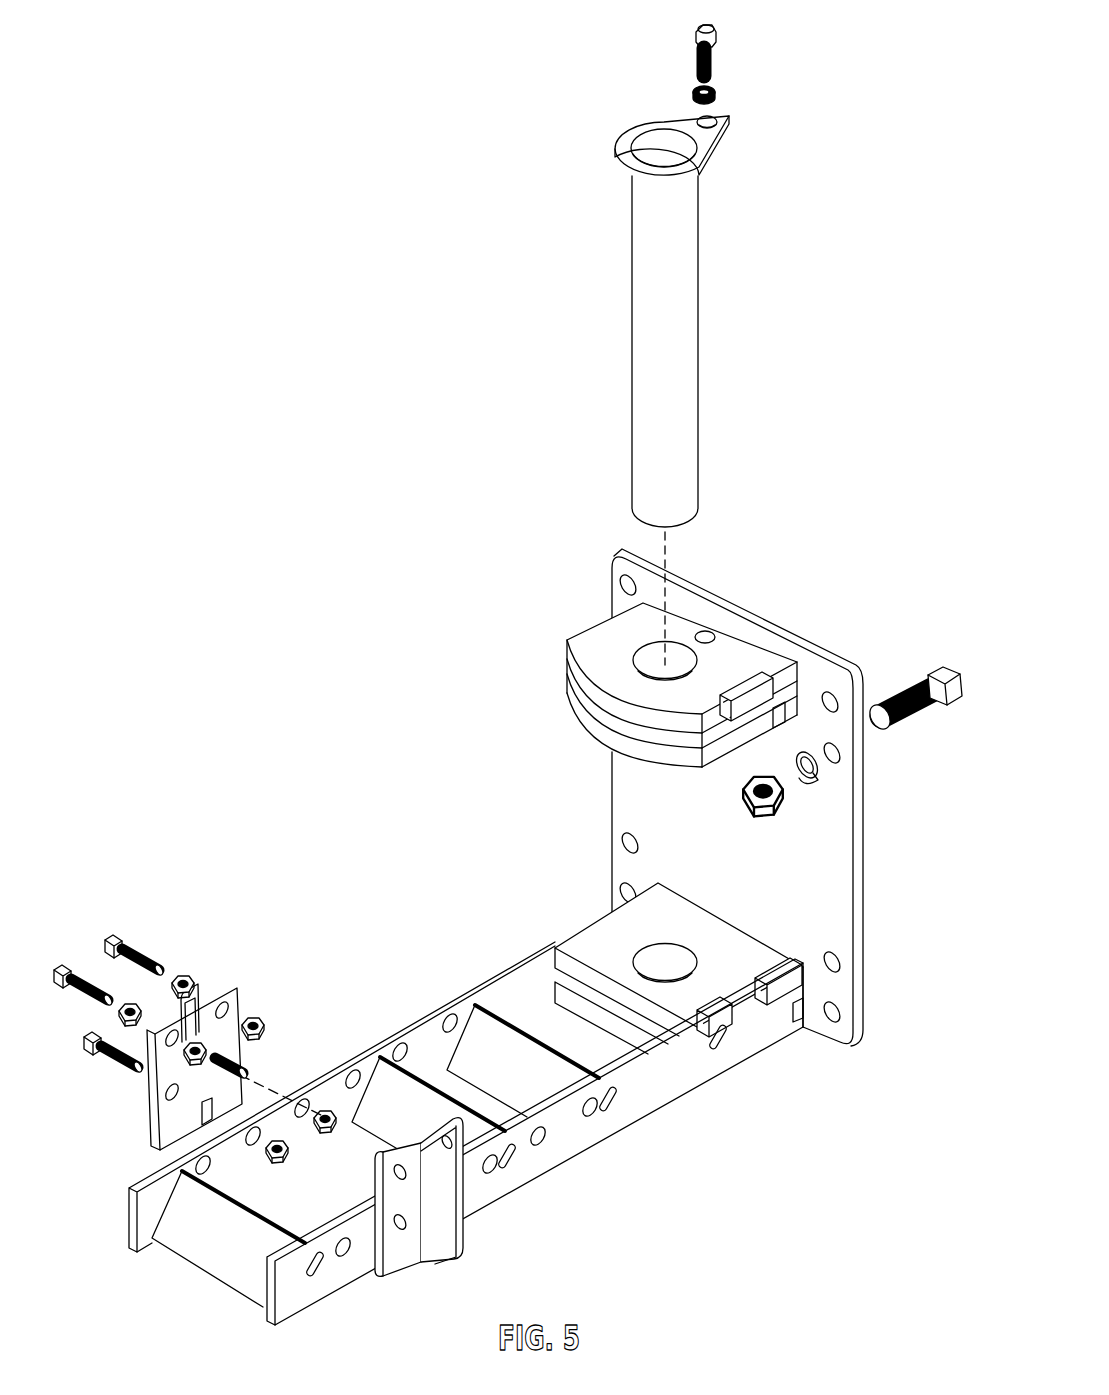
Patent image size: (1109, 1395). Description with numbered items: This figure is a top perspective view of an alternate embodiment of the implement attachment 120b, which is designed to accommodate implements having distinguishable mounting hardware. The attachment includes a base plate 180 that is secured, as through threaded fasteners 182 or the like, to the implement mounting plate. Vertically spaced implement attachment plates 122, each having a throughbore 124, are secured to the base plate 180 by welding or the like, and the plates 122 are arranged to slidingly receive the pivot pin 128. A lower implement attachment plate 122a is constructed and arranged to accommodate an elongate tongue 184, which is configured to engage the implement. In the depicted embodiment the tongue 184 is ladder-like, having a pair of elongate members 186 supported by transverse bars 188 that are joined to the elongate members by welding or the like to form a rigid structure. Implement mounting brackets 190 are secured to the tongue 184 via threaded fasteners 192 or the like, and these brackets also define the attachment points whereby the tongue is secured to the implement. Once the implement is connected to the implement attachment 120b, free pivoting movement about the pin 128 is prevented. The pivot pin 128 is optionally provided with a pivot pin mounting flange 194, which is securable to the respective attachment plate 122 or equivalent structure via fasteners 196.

The implement attachment 120b is at (520, 520).
The implement attachment plate 122 is at (583, 641).
The lower implement attachment plate 122a is at (728, 980).
The throughbore 124 is at (677, 652).
The pivot pin 128 is at (688, 270).
The base plate 180 is at (748, 598).
The threaded fasteners 182 is at (937, 678).
The elongate tongue 184 is at (555, 1140).
The elongate members 186 is at (482, 990).
The transverse bars 188 is at (218, 1242).
The implement mounting brackets 190 is at (150, 1095).
The threaded fasteners 192 is at (80, 1040).
The pivot pin mounting flange 194 is at (722, 120).
The fasteners 196 is at (710, 29).